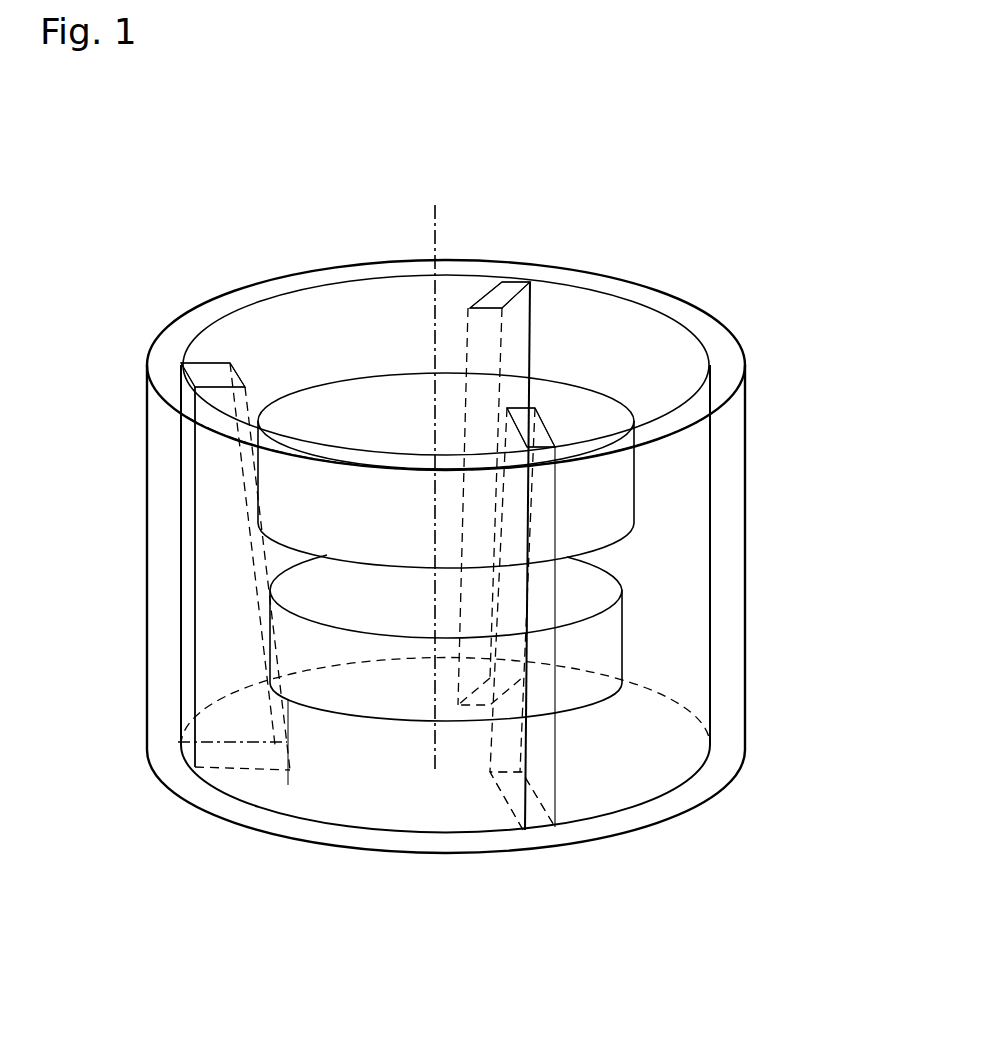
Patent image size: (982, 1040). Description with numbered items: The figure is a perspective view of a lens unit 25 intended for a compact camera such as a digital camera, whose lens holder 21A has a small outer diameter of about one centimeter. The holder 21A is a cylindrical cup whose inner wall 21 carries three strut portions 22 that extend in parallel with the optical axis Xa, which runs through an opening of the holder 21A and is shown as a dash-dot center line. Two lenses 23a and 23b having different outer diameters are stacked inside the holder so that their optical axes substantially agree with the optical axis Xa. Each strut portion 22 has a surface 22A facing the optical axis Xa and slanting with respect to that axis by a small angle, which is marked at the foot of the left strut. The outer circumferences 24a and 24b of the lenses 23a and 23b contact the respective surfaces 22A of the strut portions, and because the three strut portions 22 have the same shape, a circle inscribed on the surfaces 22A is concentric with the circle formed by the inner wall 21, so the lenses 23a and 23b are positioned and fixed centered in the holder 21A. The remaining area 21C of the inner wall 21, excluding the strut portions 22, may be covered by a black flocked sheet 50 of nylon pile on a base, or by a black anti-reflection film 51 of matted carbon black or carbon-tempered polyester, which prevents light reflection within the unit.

The inner wall 21 is at (481, 542).
The lens holder 21A is at (723, 355).
The area of inner wall 21C is at (287, 313).
The strut portion 22 is at (367, 555).
The surface 22A is at (488, 340).
The lens 23a is at (578, 425).
The lens 23b is at (595, 592).
The outer circumference 24a is at (283, 493).
The outer circumference 24b is at (291, 649).
The lens unit 25 is at (640, 263).
The flocked sheet 50 is at (468, 350).
The anti-reflection film 51 is at (468, 350).
The optical axis Xa is at (434, 237).